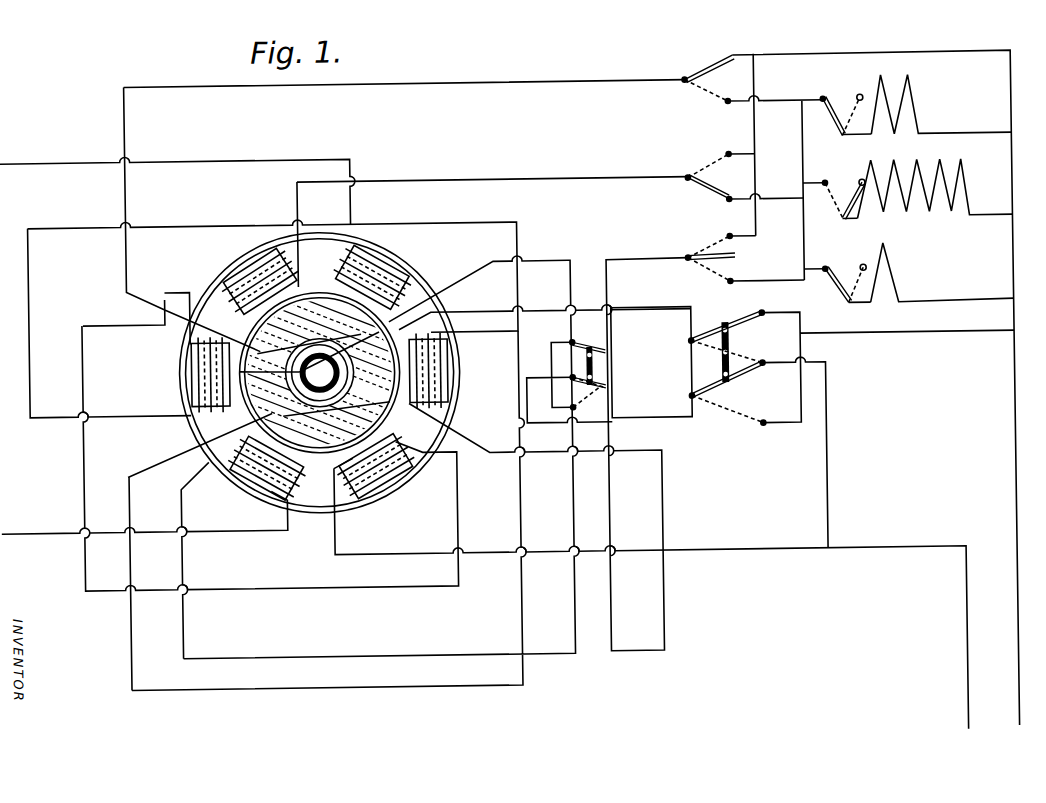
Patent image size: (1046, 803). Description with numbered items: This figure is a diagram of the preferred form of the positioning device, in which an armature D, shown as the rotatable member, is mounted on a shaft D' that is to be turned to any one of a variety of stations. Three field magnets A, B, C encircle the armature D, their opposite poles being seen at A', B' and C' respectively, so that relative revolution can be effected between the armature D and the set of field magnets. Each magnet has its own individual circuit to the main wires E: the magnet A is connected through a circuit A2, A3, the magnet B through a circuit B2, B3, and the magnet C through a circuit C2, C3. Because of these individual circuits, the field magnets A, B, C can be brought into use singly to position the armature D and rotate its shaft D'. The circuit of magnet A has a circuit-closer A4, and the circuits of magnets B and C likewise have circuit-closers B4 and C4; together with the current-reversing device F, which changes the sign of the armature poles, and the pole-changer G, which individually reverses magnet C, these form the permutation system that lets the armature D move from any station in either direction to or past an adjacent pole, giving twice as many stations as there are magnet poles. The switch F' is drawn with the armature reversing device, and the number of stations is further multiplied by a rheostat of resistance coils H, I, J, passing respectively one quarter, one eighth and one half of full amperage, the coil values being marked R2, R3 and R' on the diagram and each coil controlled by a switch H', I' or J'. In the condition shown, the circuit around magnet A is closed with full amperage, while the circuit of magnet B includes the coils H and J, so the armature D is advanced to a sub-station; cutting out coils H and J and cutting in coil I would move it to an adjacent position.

The field magnet A is at (185, 375).
The opposite pole of magnet A A' is at (446, 371).
The field magnet B is at (251, 281).
The opposite pole of magnet B B' is at (376, 469).
The field magnet C is at (376, 275).
The opposite pole of magnet C C' is at (262, 476).
The armature D is at (320, 373).
The shaft D' is at (319, 373).
The circuit wire of magnet A A2 is at (470, 82).
The circuit wire of magnet A A3 is at (30, 296).
The circuit-closer A4 is at (680, 76).
The circuit wire of magnet B B2 is at (447, 179).
The circuit wire of magnet B B3 is at (745, 552).
The circuit-closer B4 is at (710, 196).
The circuit wire of magnet C C2 is at (540, 261).
The circuit wire of magnet C C3 is at (280, 654).
The circuit-closer C4 is at (746, 242).
The main wires E is at (790, 58).
The current-reversing device F is at (995, 695).
The armature reversing switch F' is at (848, 420).
The pole-changer G is at (609, 365).
The resistance coil H is at (856, 74).
The switch H' is at (837, 124).
The resistance coil I is at (855, 158).
The switch I' is at (834, 206).
The resistance coil J is at (879, 310).
The switch J' is at (835, 283).
The resistance R2 (quarter full amperage) R2 is at (940, 103).
The resistance R3 (eighth full amperage) R3 is at (934, 179).
The resistance R' (half full amperage) R' is at (942, 271).